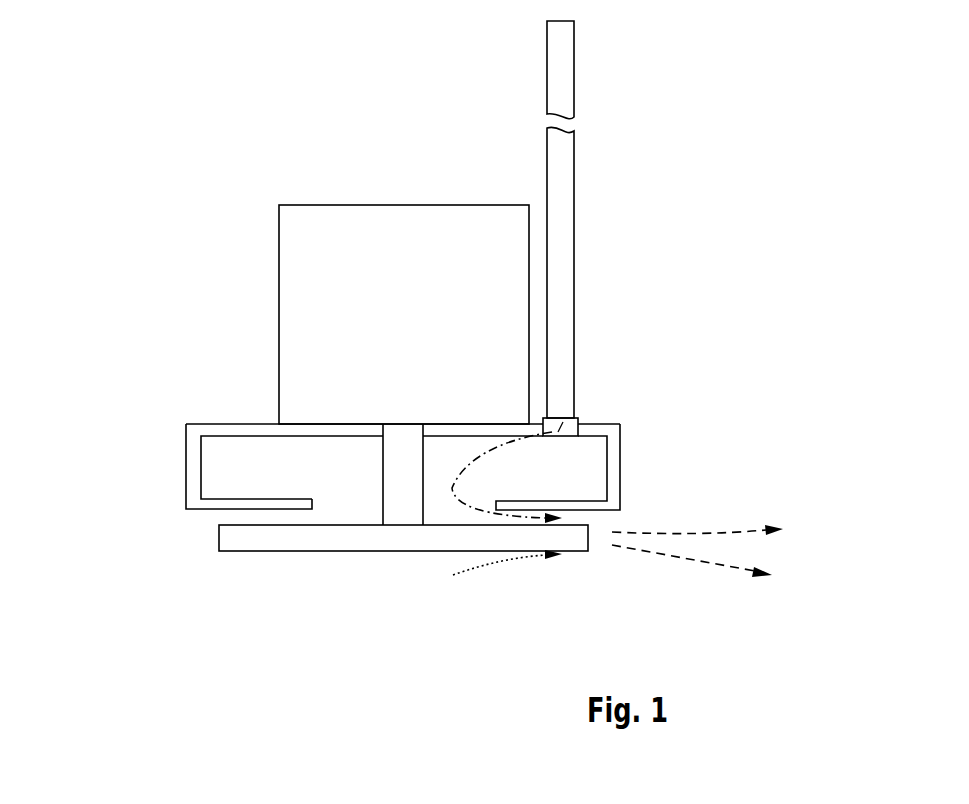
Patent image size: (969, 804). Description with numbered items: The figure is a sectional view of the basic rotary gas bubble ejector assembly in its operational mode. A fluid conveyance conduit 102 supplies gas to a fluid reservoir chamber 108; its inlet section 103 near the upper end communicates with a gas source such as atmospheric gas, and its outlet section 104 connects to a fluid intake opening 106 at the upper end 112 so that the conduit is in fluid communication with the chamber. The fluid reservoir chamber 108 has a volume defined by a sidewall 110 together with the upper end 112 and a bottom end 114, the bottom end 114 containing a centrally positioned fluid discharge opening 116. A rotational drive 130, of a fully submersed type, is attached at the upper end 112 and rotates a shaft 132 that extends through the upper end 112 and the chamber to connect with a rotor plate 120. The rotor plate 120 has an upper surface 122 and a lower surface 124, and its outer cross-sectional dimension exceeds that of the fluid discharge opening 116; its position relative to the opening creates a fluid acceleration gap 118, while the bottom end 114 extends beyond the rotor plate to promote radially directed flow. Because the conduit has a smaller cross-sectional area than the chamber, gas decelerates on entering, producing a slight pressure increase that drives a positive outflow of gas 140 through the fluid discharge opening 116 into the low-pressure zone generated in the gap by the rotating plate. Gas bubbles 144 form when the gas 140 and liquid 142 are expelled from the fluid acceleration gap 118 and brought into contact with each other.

The fluid conveyance conduit 102 is at (547, 197).
The inlet section 103 is at (577, 27).
The outlet section 104 is at (575, 405).
The fluid intake opening 106 is at (567, 430).
The fluid reservoir chamber 108 is at (237, 462).
The sidewall 110 is at (625, 465).
The upper end 112 is at (210, 423).
The bottom end 114 is at (240, 500).
The fluid discharge opening 116 is at (333, 505).
The fluid acceleration gap 118 is at (223, 517).
The rotor plate 120 is at (217, 537).
The upper surface 122 is at (275, 526).
The lower surface 124 is at (325, 551).
The rotational drive 130 is at (333, 232).
The shaft 132 is at (403, 481).
The gas 140 is at (520, 461).
The liquid 142 is at (510, 562).
The gas bubbles 144 is at (670, 552).